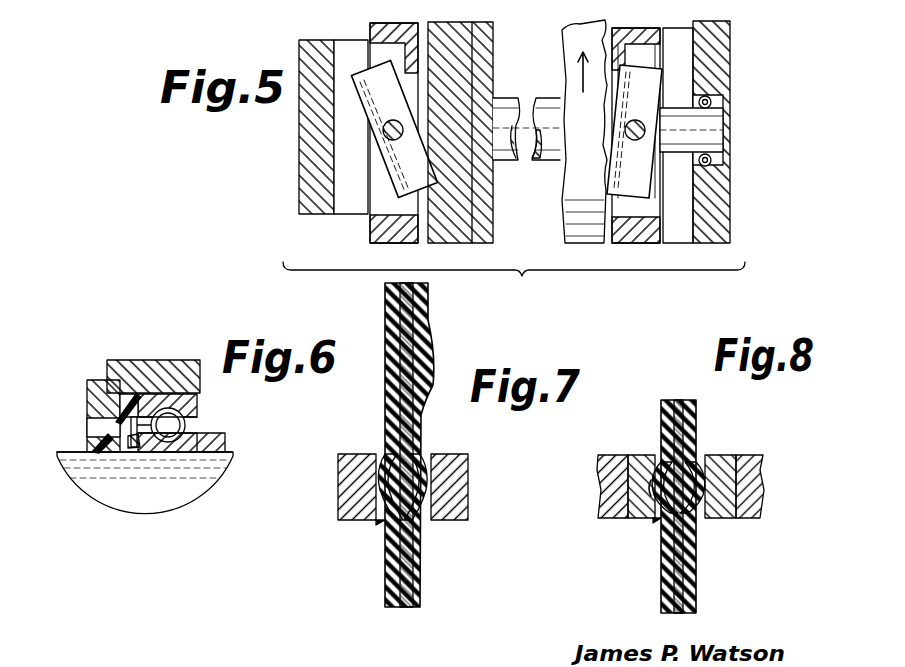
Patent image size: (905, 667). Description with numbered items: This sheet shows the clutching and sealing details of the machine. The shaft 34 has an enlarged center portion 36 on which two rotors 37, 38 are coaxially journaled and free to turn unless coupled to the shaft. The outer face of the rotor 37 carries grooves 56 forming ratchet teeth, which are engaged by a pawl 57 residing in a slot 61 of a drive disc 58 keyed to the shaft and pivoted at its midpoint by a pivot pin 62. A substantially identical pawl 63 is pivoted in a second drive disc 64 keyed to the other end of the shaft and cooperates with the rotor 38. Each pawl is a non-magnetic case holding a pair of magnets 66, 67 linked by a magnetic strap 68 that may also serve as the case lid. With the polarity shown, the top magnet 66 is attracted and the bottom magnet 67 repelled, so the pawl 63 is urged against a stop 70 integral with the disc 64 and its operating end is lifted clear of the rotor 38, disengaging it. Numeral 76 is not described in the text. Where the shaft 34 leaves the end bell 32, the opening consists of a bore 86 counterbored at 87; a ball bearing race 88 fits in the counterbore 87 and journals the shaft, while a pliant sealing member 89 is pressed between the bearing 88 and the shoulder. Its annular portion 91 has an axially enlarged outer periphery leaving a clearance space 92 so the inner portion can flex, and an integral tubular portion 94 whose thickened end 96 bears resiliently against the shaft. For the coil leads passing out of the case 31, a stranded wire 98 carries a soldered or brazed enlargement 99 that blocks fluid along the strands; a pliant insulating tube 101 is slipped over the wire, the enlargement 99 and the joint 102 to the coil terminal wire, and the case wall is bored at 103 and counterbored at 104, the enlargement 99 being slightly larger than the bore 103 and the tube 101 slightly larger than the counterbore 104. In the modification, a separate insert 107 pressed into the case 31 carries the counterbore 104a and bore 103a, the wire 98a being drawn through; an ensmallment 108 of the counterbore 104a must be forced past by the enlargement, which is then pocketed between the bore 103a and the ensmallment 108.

In FIG. 7, the case 31 is at (468, 478).
In FIG. 6, the end plate or bell 32 is at (185, 367).
In FIG. 6, the shaft 34 is at (133, 503).
In FIG. 5, the enlarged center portion of the shaft 36 is at (540, 108).
In FIG. 5, the rotor 37 is at (487, 210).
In FIG. 5, the rotor 38 is at (576, 188).
In FIG. 5, the grooves 56 is at (603, 42).
In FIG. 5, the pawl 57 is at (366, 97).
In FIG. 5, the drive member or disc 58 is at (381, 236).
In FIG. 5, the slot 61 is at (358, 216).
In FIG. 5, the pivot pin 62 is at (386, 136).
In FIG. 5, the pawl 63 is at (666, 125).
In FIG. 5, the drive disc 64 is at (644, 238).
In FIG. 5, the magnet 66 is at (668, 90).
In FIG. 5, the magnet 67 is at (694, 180).
In FIG. 5, the magnetic strap 68 is at (706, 137).
In FIG. 5, the stop 70 is at (620, 66).
In FIG. 5, the frame 76 is at (232, 1).
In FIG. 6, the bore 86 is at (87, 428).
In FIG. 6, the counterbore 87 is at (187, 403).
In FIG. 6, the ball bearing race 88 is at (200, 418).
In FIG. 6, the pliant sealing member 89 is at (126, 415).
In FIG. 6, the annular portion 91 is at (135, 440).
In FIG. 6, the clearance space 92 is at (147, 440).
In FIG. 6, the tubular portion 94 is at (122, 440).
In FIG. 6, the enlarged end of the tubular portion 96 is at (97, 448).
In FIG. 7, the stranded, twisted wire 98 is at (413, 557).
In FIG. 8, the wire 98a is at (684, 567).
In FIG. 7, the enlargement 99 is at (430, 458).
In FIG. 7, the insulating tube 101 is at (420, 583).
In FIG. 7, the joint 102 is at (428, 342).
In FIG. 7, the bore 103 is at (392, 524).
In FIG. 8, the bore 103a is at (661, 515).
In FIG. 7, the counterbore 104 is at (385, 453).
In FIG. 8, the counterbore 104a is at (655, 494).
In FIG. 8, the insert 107 is at (723, 456).
In FIG. 8, the ensmallment of the counterbore 108 is at (696, 461).